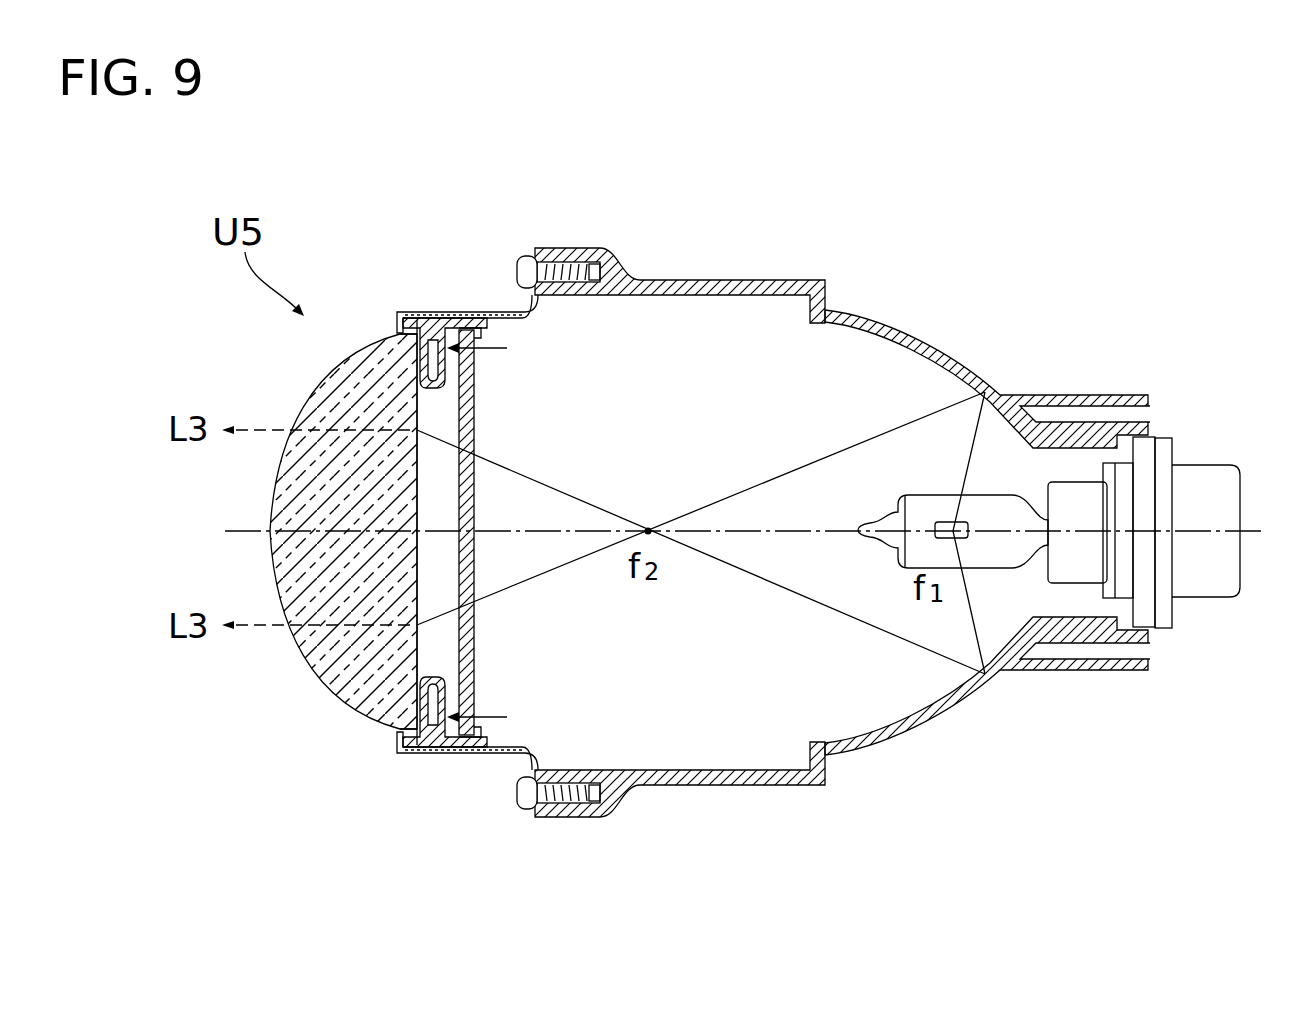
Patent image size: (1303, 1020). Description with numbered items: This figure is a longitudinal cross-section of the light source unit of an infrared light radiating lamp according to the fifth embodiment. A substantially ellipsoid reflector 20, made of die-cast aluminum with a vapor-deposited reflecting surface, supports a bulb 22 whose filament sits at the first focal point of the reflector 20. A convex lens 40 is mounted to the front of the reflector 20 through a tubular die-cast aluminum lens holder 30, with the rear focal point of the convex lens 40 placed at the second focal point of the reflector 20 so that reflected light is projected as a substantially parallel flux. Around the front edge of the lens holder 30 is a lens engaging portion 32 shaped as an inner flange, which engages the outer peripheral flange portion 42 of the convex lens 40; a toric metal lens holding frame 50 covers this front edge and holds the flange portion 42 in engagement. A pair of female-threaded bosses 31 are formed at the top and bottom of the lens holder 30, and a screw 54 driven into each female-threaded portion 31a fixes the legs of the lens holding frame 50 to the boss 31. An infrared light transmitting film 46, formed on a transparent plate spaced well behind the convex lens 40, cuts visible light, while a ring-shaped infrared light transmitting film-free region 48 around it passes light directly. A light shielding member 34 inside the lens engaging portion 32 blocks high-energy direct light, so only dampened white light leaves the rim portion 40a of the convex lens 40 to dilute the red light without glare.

The reflector 20 is at (920, 335).
The bulb 22 is at (1003, 490).
The lens holder 30 is at (735, 280).
The female-threaded boss 31 is at (600, 250).
The female-threaded portion 31a is at (563, 252).
The lens engaging portion 32 is at (445, 320).
The light shielding member 34 is at (478, 365).
The convex lens 40 is at (285, 492).
The rim portion 40a is at (395, 333).
The outer peripheral flange portion 42 is at (412, 755).
The infrared light transmitting film 46 is at (478, 440).
The infrared light transmitting film-free region 48 is at (491, 312).
The lens holding frame 50 is at (405, 318).
The screw 54 is at (520, 298).